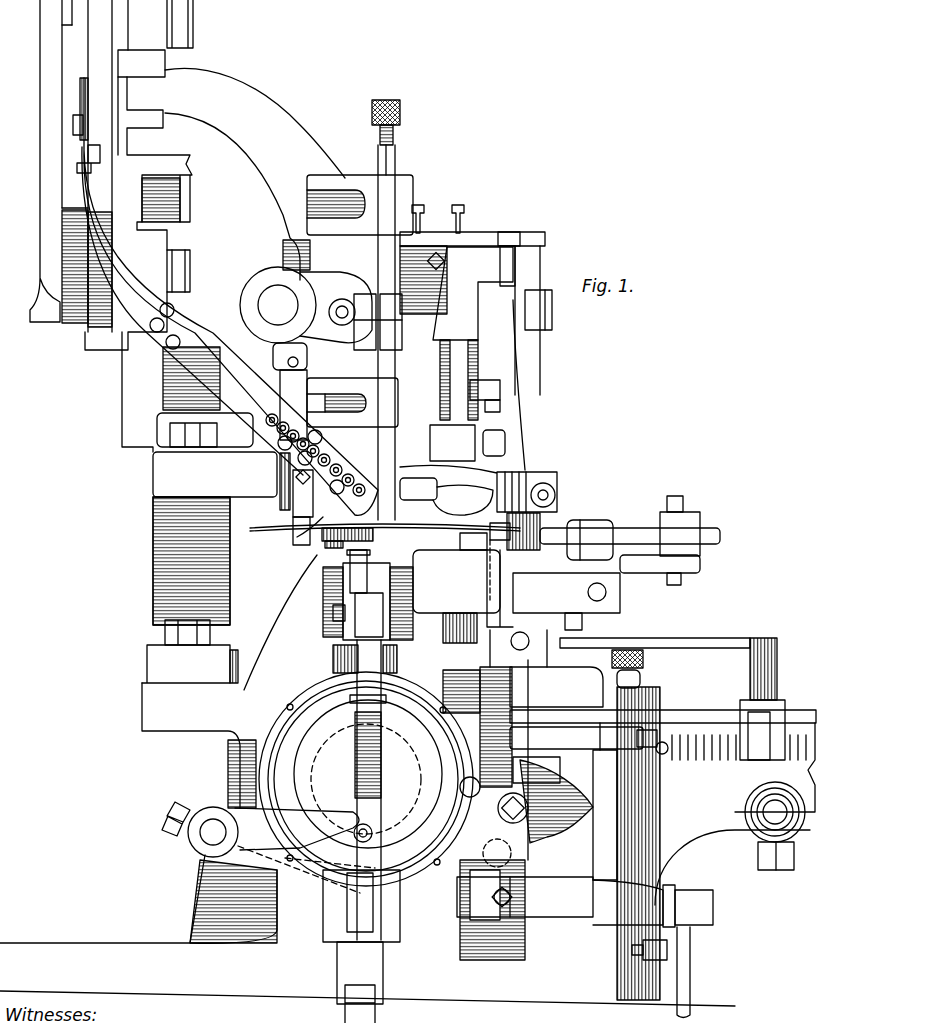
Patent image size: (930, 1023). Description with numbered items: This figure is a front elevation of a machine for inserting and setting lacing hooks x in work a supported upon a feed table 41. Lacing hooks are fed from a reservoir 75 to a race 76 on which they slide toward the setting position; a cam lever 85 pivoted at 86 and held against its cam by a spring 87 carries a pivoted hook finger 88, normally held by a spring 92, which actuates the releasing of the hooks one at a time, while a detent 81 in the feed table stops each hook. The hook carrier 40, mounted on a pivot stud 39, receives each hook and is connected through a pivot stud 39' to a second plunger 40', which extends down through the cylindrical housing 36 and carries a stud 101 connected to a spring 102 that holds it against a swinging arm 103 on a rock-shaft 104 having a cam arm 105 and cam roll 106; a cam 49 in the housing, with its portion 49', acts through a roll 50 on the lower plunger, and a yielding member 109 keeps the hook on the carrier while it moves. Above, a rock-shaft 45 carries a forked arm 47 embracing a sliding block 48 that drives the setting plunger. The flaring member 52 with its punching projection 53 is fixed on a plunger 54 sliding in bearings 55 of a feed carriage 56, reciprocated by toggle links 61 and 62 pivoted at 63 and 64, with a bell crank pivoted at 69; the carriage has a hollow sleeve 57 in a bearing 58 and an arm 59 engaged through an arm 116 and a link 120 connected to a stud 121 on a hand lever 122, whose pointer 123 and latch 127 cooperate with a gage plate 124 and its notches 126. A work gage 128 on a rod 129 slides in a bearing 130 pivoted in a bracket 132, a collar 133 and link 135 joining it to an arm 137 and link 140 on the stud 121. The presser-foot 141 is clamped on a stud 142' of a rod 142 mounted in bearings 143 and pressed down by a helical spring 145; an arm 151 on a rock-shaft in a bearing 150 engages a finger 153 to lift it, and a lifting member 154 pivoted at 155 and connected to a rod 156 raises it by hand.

The reservoir 75 is at (48, 37).
The rock-shaft 45 is at (278, 305).
The forked arm 47 is at (337, 292).
The sliding block 48 is at (400, 352).
The plunger 54 is at (396, 158).
The central projection 53 is at (360, 301).
The feed carriage 56 is at (473, 293).
The bearings 55 is at (446, 413).
The toggle link 61 is at (513, 310).
The pivot 63 is at (532, 306).
The pivot 64 is at (502, 402).
The toggle link 62 is at (503, 416).
The pivot 69 is at (500, 436).
The stud 142' is at (549, 386).
The flaring member 52 is at (478, 488).
The work gage 128 is at (502, 528).
The bearing 130 is at (598, 528).
The rod 129 is at (633, 535).
The collar 133 is at (700, 518).
The link 135 is at (680, 570).
The bracket 132 is at (553, 590).
The race 76 is at (195, 345).
The pivot 86 is at (268, 385).
The lacing hook x is at (237, 397).
The spring 87 is at (273, 358).
The cam lever 85 is at (296, 385).
The spring 92 is at (278, 468).
The hook finger 88 is at (305, 548).
The work a is at (248, 525).
The yielding member 109 is at (298, 574).
The feed table 41 is at (368, 541).
The presser-foot 141 is at (456, 542).
The carrier 40 is at (347, 594).
The detent 81 is at (416, 572).
The pivot stud 39 is at (339, 605).
The pivot stud 39' is at (311, 611).
The hollow sleeve 57 is at (333, 660).
The second plunger 40' is at (390, 790).
The bearing 58 is at (338, 978).
The cylindrical housing 36 is at (275, 725).
The cam 49 is at (353, 779).
The portion of cam 49' is at (191, 762).
The spring 102 is at (411, 750).
The swinging arm 103 is at (345, 742).
The finger 153 is at (451, 791).
The rock-shaft 104 is at (210, 838).
The stud 101 is at (305, 847).
The cam arm 105 is at (330, 905).
The cam roll 106 is at (340, 930).
The roll 50 is at (200, 912).
The bearing 150 is at (472, 910).
The arm 59 is at (546, 668).
The bearings 143 is at (518, 757).
The arm 151 is at (545, 725).
The arm 116 is at (523, 715).
The helical spring 145 is at (583, 738).
The arm 137 is at (640, 638).
The link 140 is at (740, 638).
The stud 121 is at (770, 668).
The pointer 123 is at (760, 720).
The link 120 is at (731, 706).
The notches 126 is at (702, 730).
The gage plate 124 is at (720, 712).
The latch 127 is at (752, 778).
The hand lever 122 is at (745, 826).
The pivot 155 is at (525, 897).
The rod 142 is at (526, 904).
The lifting member 154 is at (528, 928).
The rod 156 is at (692, 967).